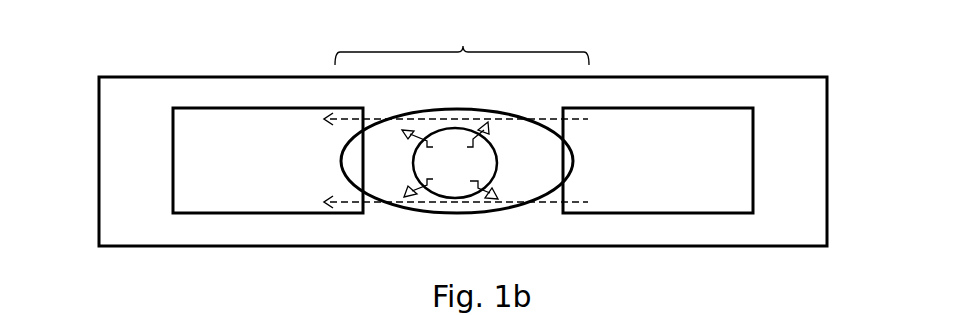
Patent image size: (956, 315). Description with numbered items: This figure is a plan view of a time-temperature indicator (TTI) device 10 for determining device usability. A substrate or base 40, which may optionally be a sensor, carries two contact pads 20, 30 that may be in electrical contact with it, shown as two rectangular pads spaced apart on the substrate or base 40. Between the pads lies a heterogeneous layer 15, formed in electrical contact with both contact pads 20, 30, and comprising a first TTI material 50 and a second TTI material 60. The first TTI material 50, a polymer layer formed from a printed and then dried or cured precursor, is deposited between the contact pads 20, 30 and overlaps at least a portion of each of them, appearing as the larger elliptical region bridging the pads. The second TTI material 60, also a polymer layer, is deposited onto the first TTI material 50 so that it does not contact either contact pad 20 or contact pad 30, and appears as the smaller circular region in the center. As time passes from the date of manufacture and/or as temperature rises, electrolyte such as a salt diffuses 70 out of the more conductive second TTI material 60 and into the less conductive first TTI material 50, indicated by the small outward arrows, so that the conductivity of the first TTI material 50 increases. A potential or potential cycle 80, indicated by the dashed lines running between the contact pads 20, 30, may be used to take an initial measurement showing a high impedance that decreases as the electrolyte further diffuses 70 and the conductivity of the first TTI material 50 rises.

The TTI device 10 is at (93, 65).
The heterogeneous layer 15 is at (462, 37).
The contact pad 20 is at (193, 150).
The contact pad 30 is at (740, 160).
The substrate or base 40 is at (118, 212).
The first TTI material 50 is at (495, 129).
The second TTI material 60 is at (463, 172).
The diffusion of electrolyte 70 is at (467, 183).
The potential or potential cycle 80 is at (573, 120).